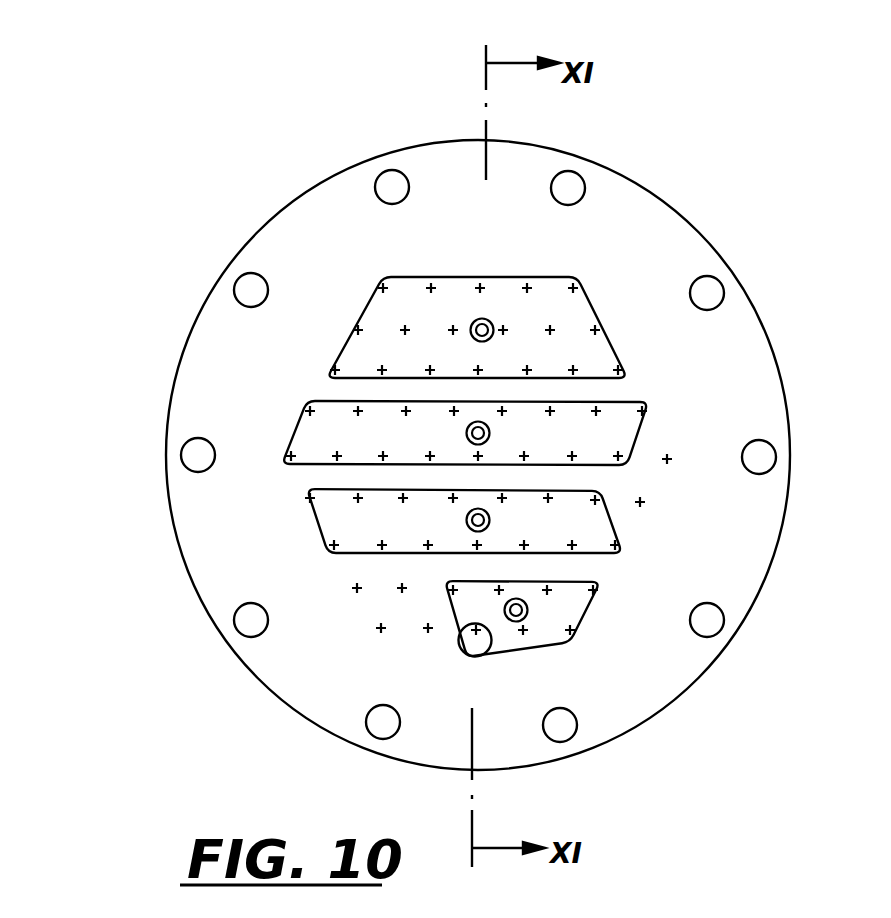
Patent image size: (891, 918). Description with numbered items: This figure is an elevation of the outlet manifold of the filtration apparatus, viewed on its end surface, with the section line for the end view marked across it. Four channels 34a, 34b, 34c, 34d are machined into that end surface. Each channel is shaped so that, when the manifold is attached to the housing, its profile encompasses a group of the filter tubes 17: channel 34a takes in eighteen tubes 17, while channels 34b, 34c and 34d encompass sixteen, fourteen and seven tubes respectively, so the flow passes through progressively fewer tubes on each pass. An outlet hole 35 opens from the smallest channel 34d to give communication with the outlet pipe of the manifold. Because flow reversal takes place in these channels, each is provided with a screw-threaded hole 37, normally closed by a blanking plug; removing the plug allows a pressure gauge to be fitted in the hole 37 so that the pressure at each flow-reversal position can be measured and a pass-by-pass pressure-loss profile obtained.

The tubes 17 is at (326, 549).
The channel 34a is at (557, 288).
The channel 34b is at (632, 437).
The channel 34c is at (600, 527).
The channel 34d is at (578, 618).
The screw-threaded hole 37 is at (470, 330).
The outlet hole 35 is at (473, 647).